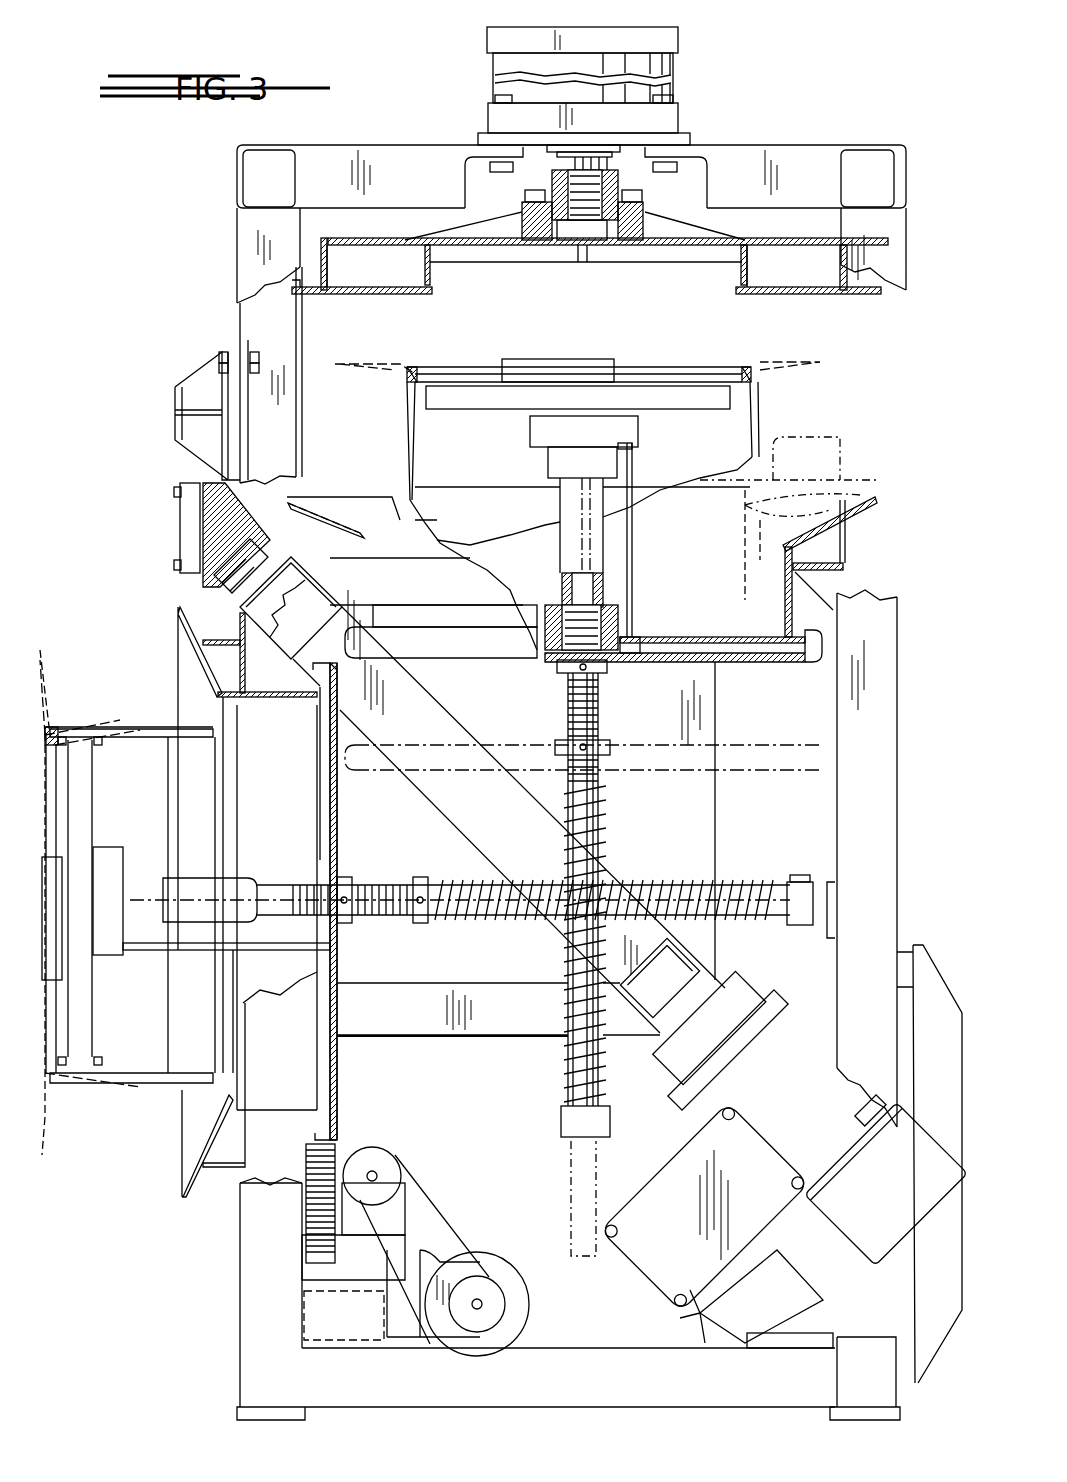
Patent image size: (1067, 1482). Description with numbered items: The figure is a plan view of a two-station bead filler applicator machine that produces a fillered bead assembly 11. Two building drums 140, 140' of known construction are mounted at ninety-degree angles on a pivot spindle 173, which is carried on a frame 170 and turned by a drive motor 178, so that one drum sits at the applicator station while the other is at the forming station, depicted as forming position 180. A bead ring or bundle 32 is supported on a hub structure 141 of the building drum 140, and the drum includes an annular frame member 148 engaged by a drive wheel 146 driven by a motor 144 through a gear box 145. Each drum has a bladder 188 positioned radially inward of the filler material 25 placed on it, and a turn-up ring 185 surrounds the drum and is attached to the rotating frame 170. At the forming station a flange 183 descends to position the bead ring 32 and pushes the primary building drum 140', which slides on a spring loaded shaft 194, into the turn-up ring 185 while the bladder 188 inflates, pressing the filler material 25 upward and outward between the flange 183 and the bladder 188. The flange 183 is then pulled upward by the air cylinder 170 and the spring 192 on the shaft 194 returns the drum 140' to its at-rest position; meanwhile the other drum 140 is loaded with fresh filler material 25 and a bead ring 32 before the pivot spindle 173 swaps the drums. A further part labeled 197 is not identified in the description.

The fillered bead assembly 11 is at (48, 1145).
The filler material 25 is at (388, 372).
The bead ring 32 is at (412, 372).
The building drum 140 is at (186, 918).
The primary building drum 140' is at (588, 510).
The hub structure 141 is at (50, 725).
The motor 144 is at (505, 1262).
The gear box 145 is at (400, 1205).
The drive wheel 146 is at (352, 1162).
The annular frame member 148 is at (337, 1137).
The rotating frame 170 is at (678, 91).
The pivot spindle 173 is at (291, 556).
The drive motor 178 is at (784, 1216).
The forming position 180 is at (458, 142).
The flange 183 is at (770, 294).
The turn-up ring 185 is at (307, 503).
The bladder 188 is at (862, 492).
The spring 192 is at (603, 830).
The shaft 194 is at (565, 690).
The frame post 197 is at (240, 1270).